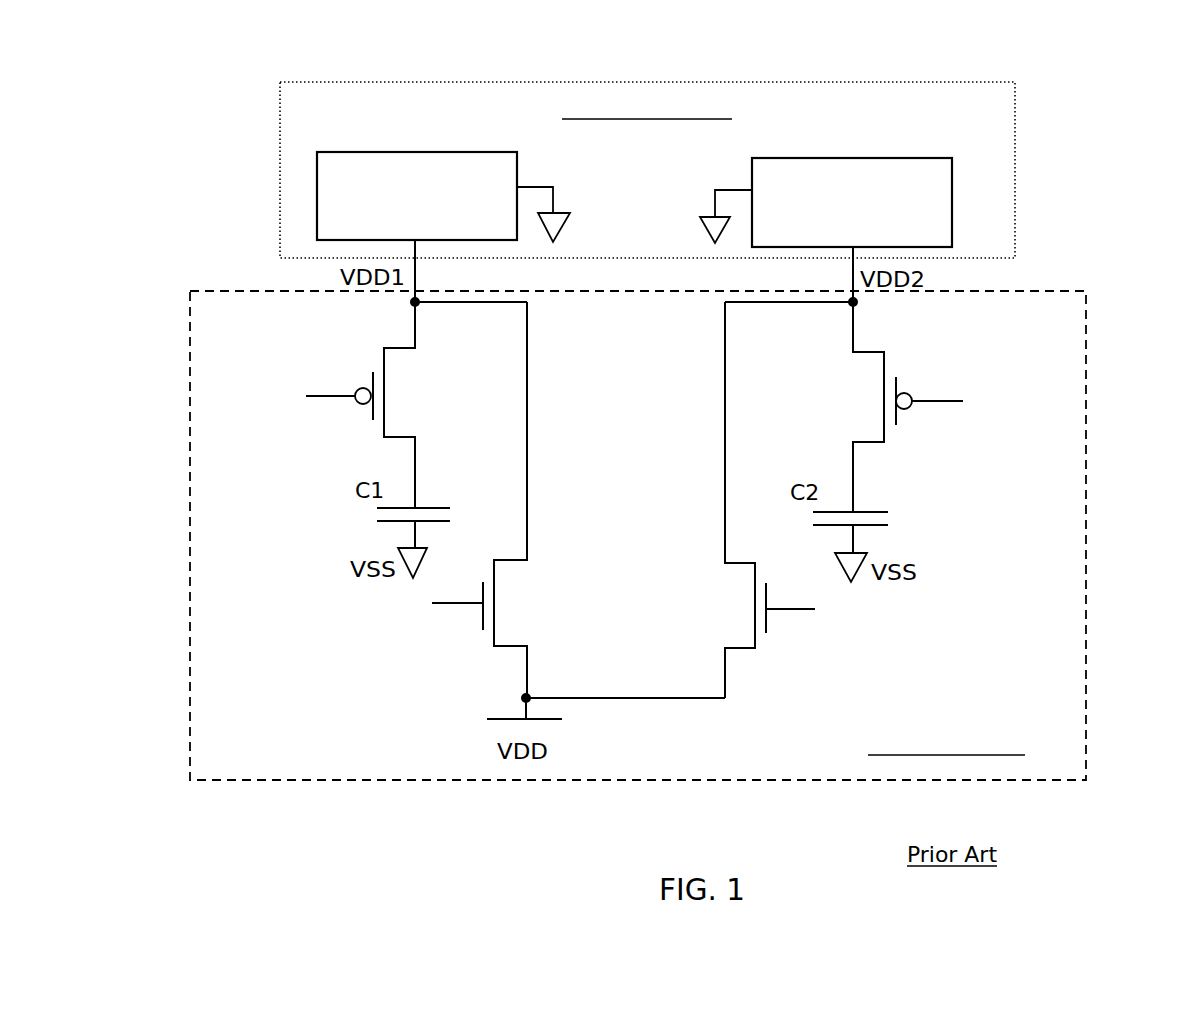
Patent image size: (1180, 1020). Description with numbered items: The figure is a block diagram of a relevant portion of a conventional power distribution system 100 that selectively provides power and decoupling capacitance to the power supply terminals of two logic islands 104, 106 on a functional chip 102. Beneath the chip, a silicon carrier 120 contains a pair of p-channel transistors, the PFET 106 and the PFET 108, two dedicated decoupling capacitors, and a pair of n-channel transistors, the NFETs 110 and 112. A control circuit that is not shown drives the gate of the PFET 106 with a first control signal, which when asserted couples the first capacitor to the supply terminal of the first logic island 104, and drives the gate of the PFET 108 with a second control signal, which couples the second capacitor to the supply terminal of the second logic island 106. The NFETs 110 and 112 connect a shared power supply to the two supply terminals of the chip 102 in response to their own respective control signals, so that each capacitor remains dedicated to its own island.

The power distribution system 100 is at (1122, 175).
The functional chip 102 is at (940, 82).
The logic island 1 104 is at (382, 152).
The logic island 2 / PFET 106 is at (814, 158).
The PFET 108 is at (843, 400).
The NFET 110 is at (522, 596).
The NFET 112 is at (713, 598).
The silicon carrier 120 is at (1050, 293).